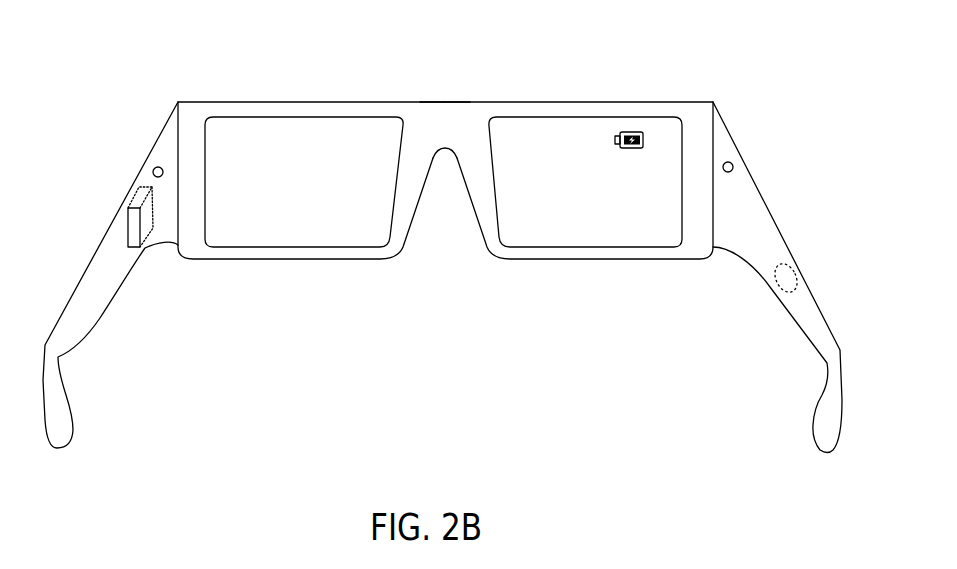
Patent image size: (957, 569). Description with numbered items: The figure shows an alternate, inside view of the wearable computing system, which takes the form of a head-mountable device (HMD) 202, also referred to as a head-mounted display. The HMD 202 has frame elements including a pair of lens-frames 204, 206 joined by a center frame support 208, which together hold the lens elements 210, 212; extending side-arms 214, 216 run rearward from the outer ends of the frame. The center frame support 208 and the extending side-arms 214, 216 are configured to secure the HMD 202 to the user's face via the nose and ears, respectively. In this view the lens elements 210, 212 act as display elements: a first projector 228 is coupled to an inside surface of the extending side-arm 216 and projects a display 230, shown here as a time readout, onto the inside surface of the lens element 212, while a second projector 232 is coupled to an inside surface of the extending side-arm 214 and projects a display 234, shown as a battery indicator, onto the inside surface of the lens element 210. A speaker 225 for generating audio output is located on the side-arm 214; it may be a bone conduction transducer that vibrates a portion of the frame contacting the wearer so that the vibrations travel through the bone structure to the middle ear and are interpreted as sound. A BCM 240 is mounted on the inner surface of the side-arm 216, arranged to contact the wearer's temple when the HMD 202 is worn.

The head-mountable device 202 is at (229, 85).
The lens-frame 204 is at (643, 260).
The lens-frame 206 is at (228, 260).
The center frame support 208 is at (443, 102).
The lens element 210 is at (548, 237).
The lens element 212 is at (318, 240).
The extending side-arm 214 is at (768, 207).
The extending side-arm 216 is at (100, 242).
The speaker 225 is at (782, 283).
The first projector 228 is at (152, 169).
The display 230 is at (297, 145).
The second projector 232 is at (730, 162).
The display 234 is at (618, 150).
The BCM 240 is at (132, 250).